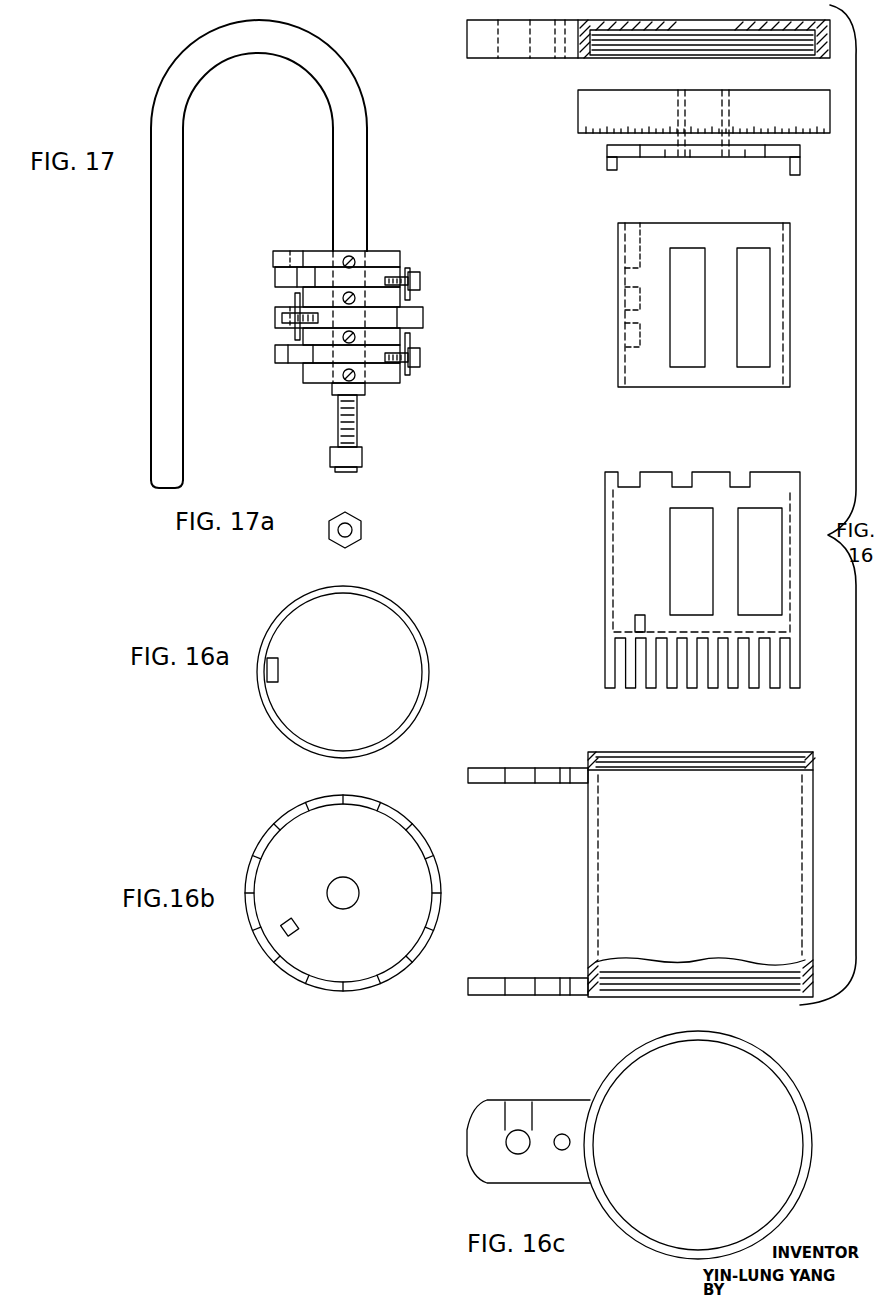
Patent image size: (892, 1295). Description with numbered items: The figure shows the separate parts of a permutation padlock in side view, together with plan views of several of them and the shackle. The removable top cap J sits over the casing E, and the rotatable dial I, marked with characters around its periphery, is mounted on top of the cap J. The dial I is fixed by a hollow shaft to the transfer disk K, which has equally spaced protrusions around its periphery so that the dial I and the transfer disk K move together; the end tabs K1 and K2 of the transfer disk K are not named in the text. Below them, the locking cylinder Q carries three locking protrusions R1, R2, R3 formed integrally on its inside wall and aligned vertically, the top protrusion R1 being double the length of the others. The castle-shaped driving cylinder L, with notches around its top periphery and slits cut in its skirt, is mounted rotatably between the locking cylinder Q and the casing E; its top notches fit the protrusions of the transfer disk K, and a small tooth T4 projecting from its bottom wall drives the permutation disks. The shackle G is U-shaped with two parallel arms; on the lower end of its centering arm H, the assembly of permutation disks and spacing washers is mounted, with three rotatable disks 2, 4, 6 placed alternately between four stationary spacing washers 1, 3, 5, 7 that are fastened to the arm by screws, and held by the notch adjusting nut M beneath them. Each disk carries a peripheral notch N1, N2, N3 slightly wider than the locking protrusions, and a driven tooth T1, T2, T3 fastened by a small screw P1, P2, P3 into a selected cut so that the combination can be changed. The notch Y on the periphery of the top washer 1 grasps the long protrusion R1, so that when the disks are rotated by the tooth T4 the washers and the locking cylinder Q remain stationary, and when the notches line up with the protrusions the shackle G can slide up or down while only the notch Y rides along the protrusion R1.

In FIG. 17, the shackle G is at (183, 210).
In FIG. 17, the assembly of the permutation disks H is at (367, 200).
In FIG. 17, the notch Y is at (273, 256).
In FIG. 17, the spacing washer 1 is at (403, 262).
In FIG. 17, the permutation disk 2 is at (418, 291).
In FIG. 17, the spacing washer 3 is at (423, 318).
In FIG. 17, the permutation disk 4 is at (424, 340).
In FIG. 17, the spacing washer 5 is at (422, 360).
In FIG. 17, the permutation disk 6 is at (420, 384).
In FIG. 17, the spacing washer 7 is at (392, 398).
In FIG. 17, the notch adjusting nut M is at (363, 456).
In FIG. 17A, the notch adjusting nut M is at (361, 518).
In FIG. 17, the notch N1 is at (300, 285).
In FIG. 17, the notch N2 is at (375, 300).
In FIG. 17, the notch N3 is at (300, 370).
In FIG. 17, the screw P1 is at (421, 283).
In FIG. 17, the screw P2 is at (425, 372).
In FIG. 17, the screw P3 is at (280, 318).
In FIG. 17, the driven tooth T1 is at (415, 305).
In FIG. 17, the driven tooth T2 is at (411, 386).
In FIG. 17, the driven tooth T3 is at (297, 338).
In FIG. 16, the tooth T4 is at (635, 625).
In FIG. 16B, the tooth T4 is at (285, 935).
In FIG. 16, the top cap J is at (470, 44).
In FIG. 16, the dial I is at (578, 122).
In FIG. 16, the transfer disk K is at (718, 158).
In FIG. 16, the slide bar right tab K1 is at (802, 170).
In FIG. 16, the slide bar left tab K2 is at (610, 162).
In FIG. 16, the locking cylinder Q is at (791, 318).
In FIG. 16, the locking protrusion R1 is at (632, 255).
In FIG. 16A, the locking protrusion R1 is at (265, 680).
In FIG. 16, the locking protrusion R2 is at (632, 300).
In FIG. 16, the locking protrusion R3 is at (632, 338).
In FIG. 16, the driving cylinder L is at (605, 522).
In FIG. 16, the casing E is at (813, 970).
In FIG. 16C, the casing E is at (780, 1062).